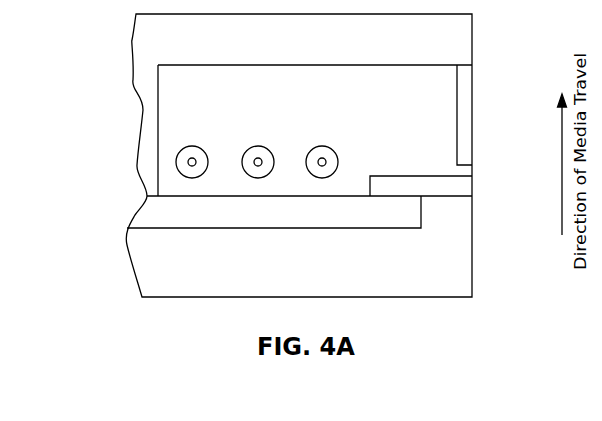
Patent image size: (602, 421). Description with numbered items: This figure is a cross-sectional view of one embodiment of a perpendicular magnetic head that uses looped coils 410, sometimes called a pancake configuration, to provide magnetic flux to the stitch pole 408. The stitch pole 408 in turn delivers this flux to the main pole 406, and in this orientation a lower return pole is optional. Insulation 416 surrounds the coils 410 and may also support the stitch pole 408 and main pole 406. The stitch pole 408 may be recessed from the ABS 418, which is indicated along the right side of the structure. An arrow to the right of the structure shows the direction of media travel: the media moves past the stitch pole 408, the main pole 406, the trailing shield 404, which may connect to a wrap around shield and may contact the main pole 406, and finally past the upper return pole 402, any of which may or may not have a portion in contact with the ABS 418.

The upper return pole 402 is at (315, 47).
The trailing shield 404 is at (472, 97).
The main pole 406 is at (472, 183).
The stitch pole 408 is at (274, 212).
The looped coils 410 is at (193, 146).
The insulation 416 is at (309, 130).
The ABS 418 is at (473, 30).